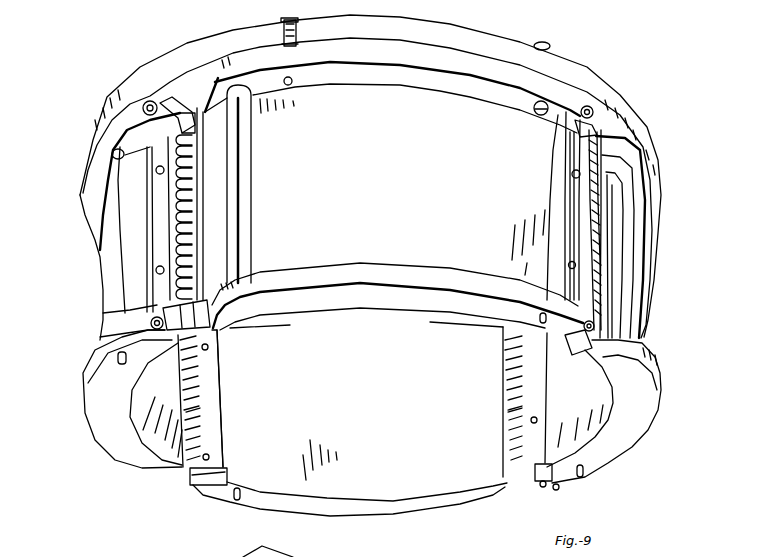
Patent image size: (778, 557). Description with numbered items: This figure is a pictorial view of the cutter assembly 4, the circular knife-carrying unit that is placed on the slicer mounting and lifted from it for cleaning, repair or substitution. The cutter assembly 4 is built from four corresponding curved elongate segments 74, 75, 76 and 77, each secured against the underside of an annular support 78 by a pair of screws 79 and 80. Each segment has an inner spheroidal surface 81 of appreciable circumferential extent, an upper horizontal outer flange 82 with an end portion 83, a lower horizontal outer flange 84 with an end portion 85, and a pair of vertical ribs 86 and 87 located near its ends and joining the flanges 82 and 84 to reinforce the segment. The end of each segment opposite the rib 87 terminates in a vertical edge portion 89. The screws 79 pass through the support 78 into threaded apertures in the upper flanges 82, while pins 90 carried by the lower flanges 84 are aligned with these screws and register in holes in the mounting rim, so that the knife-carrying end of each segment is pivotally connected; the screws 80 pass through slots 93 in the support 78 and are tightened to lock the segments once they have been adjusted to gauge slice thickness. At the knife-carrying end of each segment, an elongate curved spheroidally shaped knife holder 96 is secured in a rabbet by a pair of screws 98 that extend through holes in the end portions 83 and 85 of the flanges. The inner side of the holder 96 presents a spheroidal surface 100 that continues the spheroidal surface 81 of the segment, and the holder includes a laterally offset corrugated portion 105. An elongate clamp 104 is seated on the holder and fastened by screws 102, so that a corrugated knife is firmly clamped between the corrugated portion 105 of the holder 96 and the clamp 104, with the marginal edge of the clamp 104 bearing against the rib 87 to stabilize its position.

The cutter assembly 4 is at (165, 47).
The curved elongate segment 74 is at (391, 176).
The curved elongate segment 75 is at (103, 272).
The curved elongate segment 76 is at (332, 500).
The curved elongate segment 77 is at (617, 232).
The annular support 78 is at (228, 40).
The screw 79 is at (551, 45).
The screw 80 is at (283, 20).
The inner spheroidal surface 81 is at (618, 406).
The upper horizontal outer flange 82 is at (426, 82).
The end portion 83 is at (170, 105).
The lower horizontal outer flange 84 is at (425, 276).
The end portion 85 is at (106, 302).
The vertical rib 86 is at (252, 152).
The vertical rib 87 is at (123, 216).
The vertical edge portion 89 is at (194, 174).
The pin 90 is at (118, 358).
The slot 93 is at (283, 34).
The knife holder 96 is at (213, 376).
The screw 98 is at (150, 101).
The spheroidal surface 100 is at (212, 390).
The screw 102 is at (156, 171).
The clamp 104 is at (160, 214).
The corrugated portion 105 is at (196, 410).